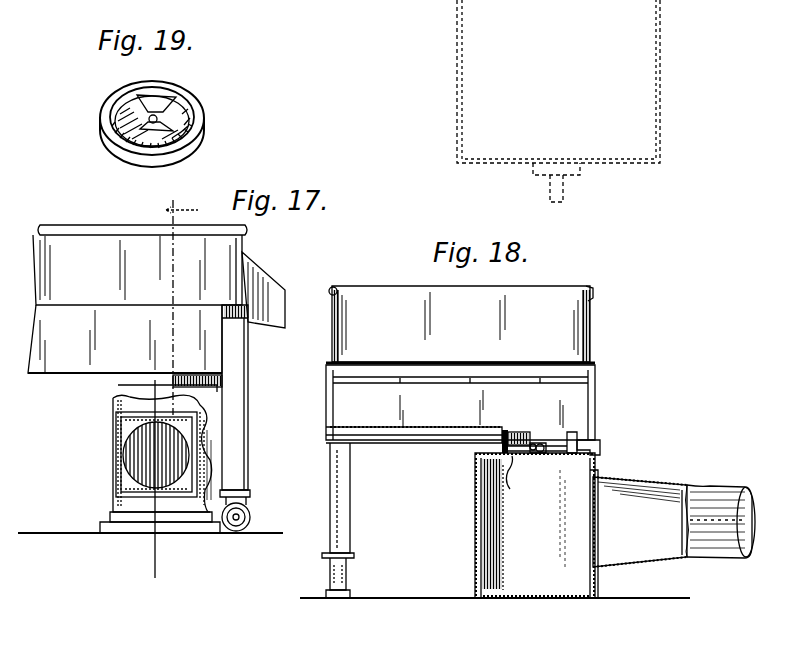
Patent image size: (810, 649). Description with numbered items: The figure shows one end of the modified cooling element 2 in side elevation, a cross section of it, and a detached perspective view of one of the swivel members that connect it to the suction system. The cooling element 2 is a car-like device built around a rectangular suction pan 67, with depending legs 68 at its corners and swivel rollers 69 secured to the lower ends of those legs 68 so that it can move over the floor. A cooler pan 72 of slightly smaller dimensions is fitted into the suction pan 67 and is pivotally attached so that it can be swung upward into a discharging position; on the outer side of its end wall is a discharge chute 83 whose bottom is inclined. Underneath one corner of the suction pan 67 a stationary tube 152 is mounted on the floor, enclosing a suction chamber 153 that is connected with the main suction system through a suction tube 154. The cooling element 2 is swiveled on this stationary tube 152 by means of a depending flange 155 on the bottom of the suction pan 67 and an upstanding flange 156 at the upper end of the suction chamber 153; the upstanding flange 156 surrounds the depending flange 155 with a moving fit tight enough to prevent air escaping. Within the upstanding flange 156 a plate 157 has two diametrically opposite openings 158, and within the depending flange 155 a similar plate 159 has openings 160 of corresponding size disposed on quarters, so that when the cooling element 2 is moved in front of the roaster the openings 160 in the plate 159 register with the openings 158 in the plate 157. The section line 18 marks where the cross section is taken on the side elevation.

In FIG. 17, the cooling element 2 is at (55, 376).
In FIG. 18, the cooling element 2 is at (595, 409).
In FIG. 17, the section line 18 is at (172, 389).
In FIG. 17, the suction pan 67 is at (102, 362).
In FIG. 18, the suction pan 67 is at (447, 427).
In FIG. 17, the legs 68 is at (240, 465).
In FIG. 18, the legs 68 is at (345, 512).
In FIG. 17, the swivel rollers 69 is at (250, 517).
In FIG. 18, the swivel rollers 69 is at (347, 575).
In FIG. 17, the cooler pan 72 is at (50, 266).
In FIG. 18, the cooler pan 72 is at (582, 346).
In FIG. 17, the discharge chute 83 is at (272, 322).
In FIG. 17, the stationary tube 152 is at (215, 432).
In FIG. 18, the stationary tube 152 is at (478, 518).
In FIG. 17, the suction chamber 153 is at (125, 430).
In FIG. 18, the suction chamber 153 is at (500, 552).
In FIG. 18, the suction tube 154 is at (722, 492).
In FIG. 18, the depending flange 155 is at (517, 440).
In FIG. 19, the upstanding flange 156 is at (192, 137).
In FIG. 17, the upstanding flange 156 is at (188, 382).
In FIG. 18, the upstanding flange 156 is at (486, 450).
In FIG. 19, the plate 157 is at (136, 119).
In FIG. 18, the plate 157 is at (548, 456).
In FIG. 19, the openings 158 is at (155, 102).
In FIG. 18, the openings 158 is at (559, 456).
In FIG. 18, the plate 159 is at (541, 447).
In FIG. 18, the openings 160 is at (512, 456).